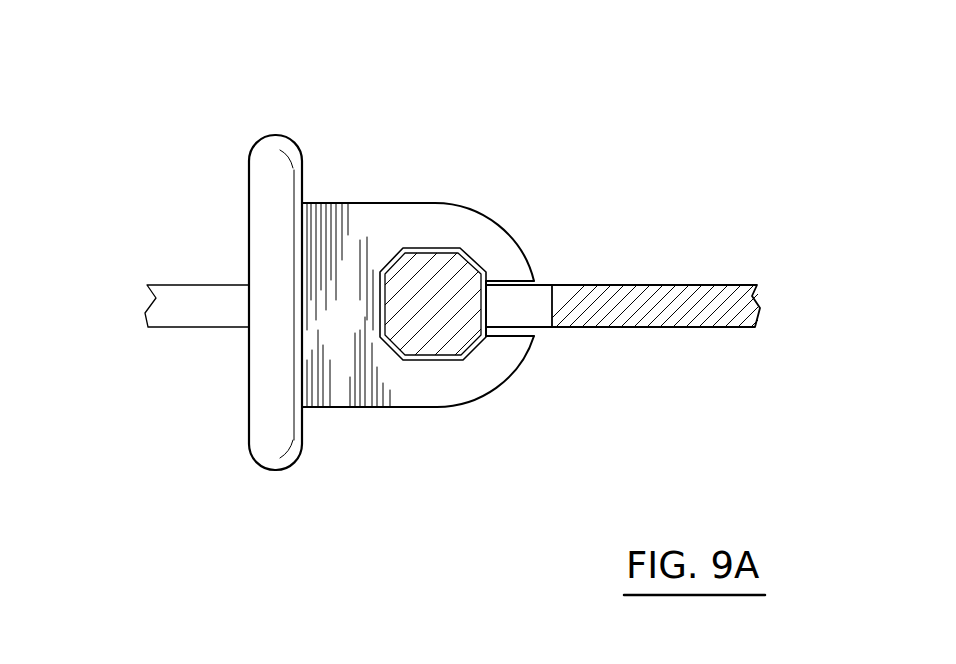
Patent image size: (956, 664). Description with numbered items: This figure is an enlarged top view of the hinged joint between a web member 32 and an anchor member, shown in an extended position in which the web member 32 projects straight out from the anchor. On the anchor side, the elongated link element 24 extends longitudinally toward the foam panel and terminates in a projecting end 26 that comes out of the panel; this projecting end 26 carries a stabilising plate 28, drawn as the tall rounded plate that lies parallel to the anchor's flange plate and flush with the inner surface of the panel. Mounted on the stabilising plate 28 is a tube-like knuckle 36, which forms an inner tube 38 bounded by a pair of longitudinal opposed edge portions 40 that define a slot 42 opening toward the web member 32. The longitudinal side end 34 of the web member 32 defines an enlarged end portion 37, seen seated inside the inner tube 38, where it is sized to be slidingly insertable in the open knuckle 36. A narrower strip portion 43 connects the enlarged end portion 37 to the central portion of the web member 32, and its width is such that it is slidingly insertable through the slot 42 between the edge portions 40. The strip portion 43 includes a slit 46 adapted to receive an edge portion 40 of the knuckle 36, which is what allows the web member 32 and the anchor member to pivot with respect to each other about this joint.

The link element 24 is at (175, 290).
The projecting end 26 is at (289, 116).
The stabilising plate 28 is at (260, 373).
The web member 32 is at (756, 330).
The longitudinal side end 34 is at (667, 284).
The tube-like knuckle 36 is at (446, 210).
The enlarged end portion 37 is at (428, 346).
The inner tube 38 is at (441, 262).
The edge portion 40 is at (517, 272).
The slot 42 is at (510, 296).
The strip portion 43 is at (592, 328).
The slit 46 is at (487, 314).